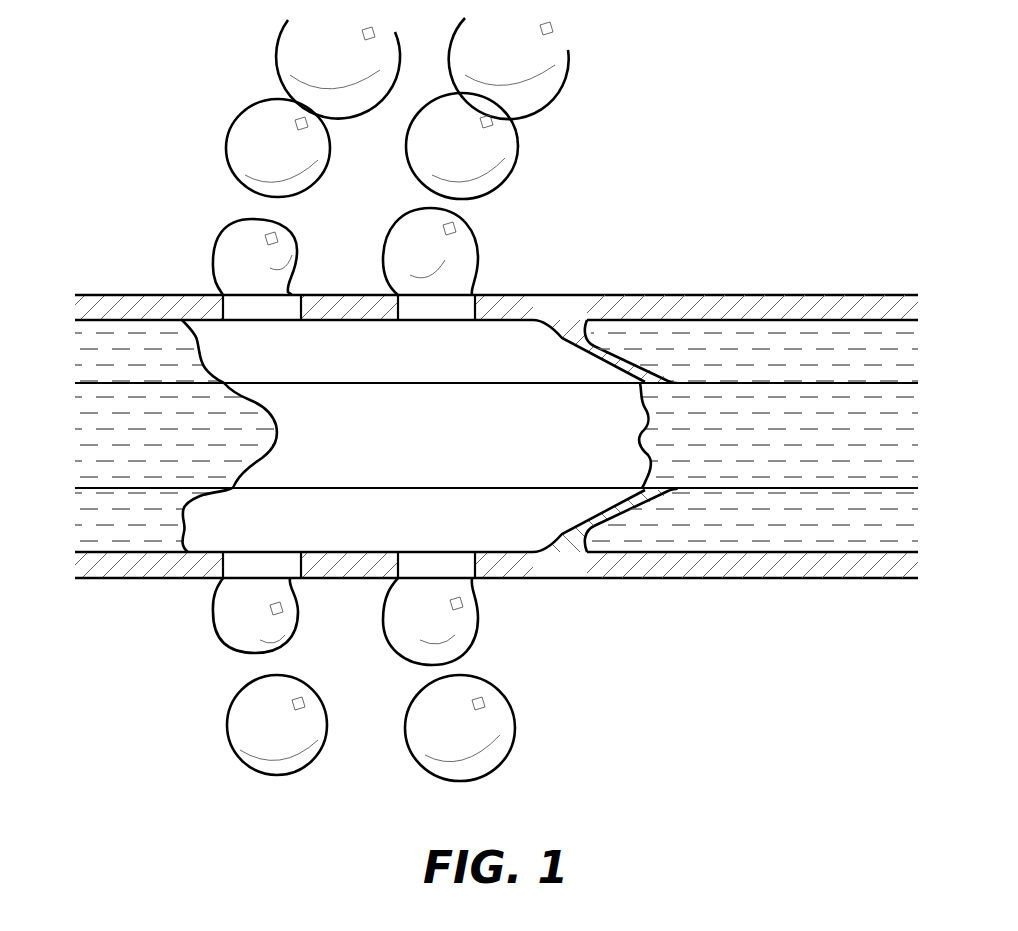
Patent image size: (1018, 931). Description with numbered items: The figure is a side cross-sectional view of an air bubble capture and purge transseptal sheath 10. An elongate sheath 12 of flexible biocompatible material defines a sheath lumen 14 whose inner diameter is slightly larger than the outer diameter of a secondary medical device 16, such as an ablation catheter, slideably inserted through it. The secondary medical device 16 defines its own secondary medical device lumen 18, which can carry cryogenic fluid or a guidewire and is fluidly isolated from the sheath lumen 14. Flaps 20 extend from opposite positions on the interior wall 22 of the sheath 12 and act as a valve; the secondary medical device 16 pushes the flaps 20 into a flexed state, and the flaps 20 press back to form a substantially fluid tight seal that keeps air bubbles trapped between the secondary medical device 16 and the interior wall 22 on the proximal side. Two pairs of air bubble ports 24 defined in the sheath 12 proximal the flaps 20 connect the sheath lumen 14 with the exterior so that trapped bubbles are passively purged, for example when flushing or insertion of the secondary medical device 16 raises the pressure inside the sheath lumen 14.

The transseptal sheath 10 is at (648, 185).
The elongate sheath 12 is at (838, 284).
The sheath lumen 14 is at (287, 362).
The secondary medical device 16 is at (380, 383).
The secondary medical device lumen 18 is at (433, 432).
The flaps 20 is at (600, 354).
The interior wall 22 is at (739, 320).
The air bubble ports 24 is at (250, 312).